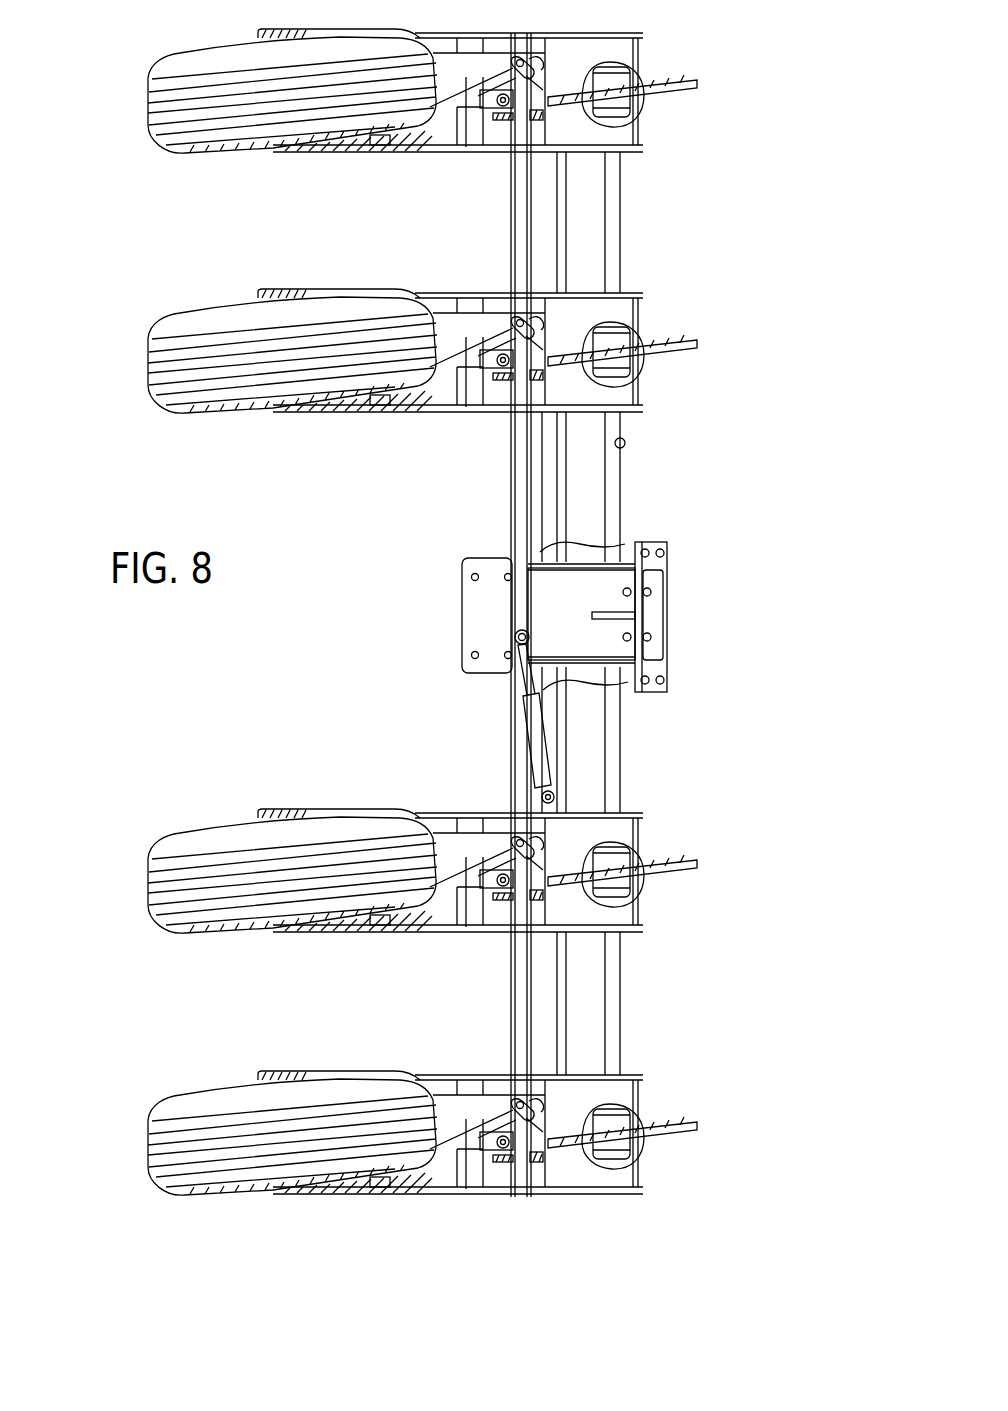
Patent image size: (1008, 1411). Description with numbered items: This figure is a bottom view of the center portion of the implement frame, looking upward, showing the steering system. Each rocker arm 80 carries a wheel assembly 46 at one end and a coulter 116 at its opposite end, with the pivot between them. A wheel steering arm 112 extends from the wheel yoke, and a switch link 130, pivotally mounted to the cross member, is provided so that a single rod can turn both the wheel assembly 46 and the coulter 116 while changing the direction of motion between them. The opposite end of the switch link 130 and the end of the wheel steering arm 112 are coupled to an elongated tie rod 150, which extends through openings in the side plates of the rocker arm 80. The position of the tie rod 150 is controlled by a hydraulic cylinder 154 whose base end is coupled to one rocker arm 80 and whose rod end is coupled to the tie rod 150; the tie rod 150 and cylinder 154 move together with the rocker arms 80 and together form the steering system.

The wheel assembly 46 is at (130, 120).
The rocker arm 80 is at (435, 162).
The wheel steering arm 112 is at (466, 147).
The switch link 130 is at (545, 55).
The coulter 116 is at (668, 93).
The tie rod 150 is at (517, 492).
The hydraulic cylinder 154 is at (532, 717).